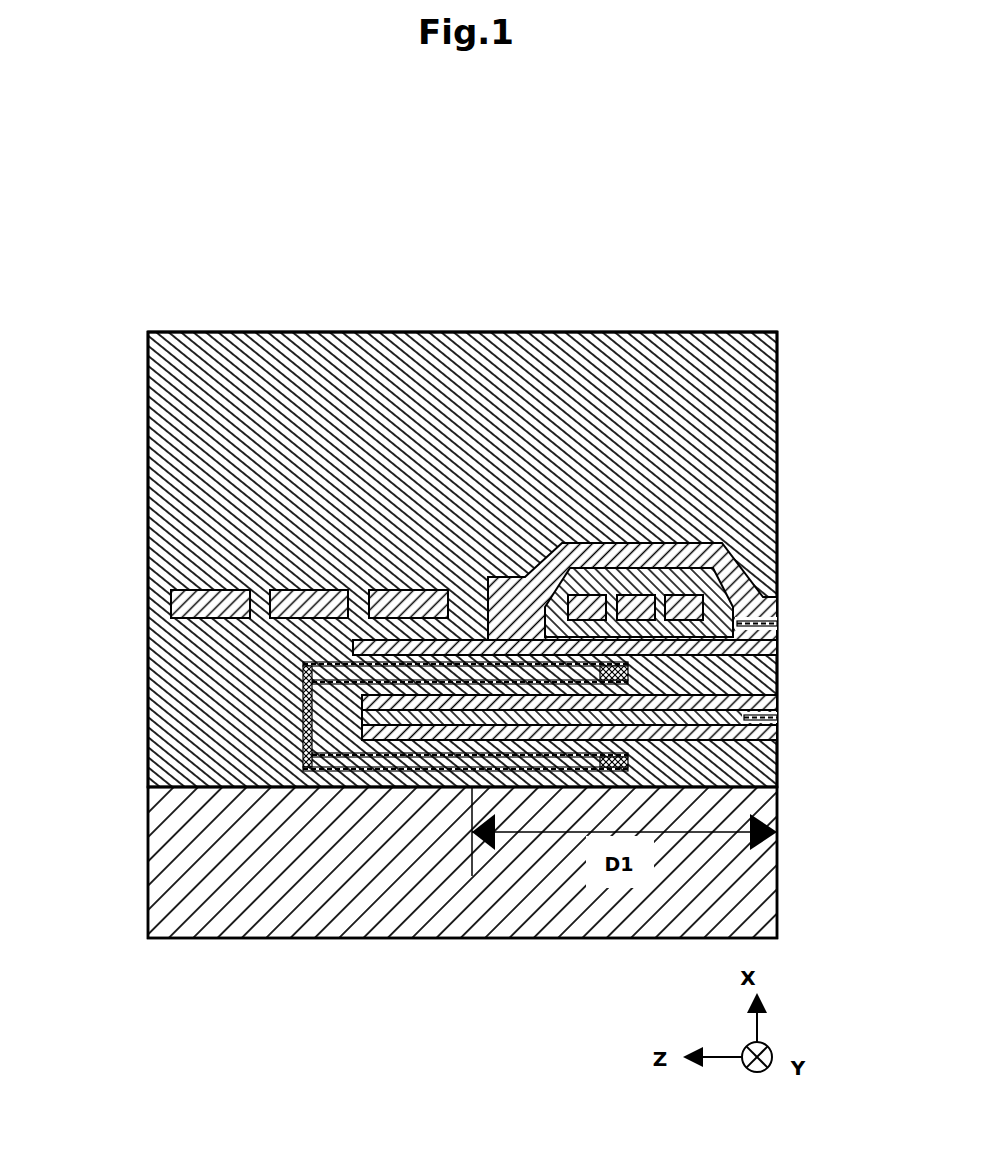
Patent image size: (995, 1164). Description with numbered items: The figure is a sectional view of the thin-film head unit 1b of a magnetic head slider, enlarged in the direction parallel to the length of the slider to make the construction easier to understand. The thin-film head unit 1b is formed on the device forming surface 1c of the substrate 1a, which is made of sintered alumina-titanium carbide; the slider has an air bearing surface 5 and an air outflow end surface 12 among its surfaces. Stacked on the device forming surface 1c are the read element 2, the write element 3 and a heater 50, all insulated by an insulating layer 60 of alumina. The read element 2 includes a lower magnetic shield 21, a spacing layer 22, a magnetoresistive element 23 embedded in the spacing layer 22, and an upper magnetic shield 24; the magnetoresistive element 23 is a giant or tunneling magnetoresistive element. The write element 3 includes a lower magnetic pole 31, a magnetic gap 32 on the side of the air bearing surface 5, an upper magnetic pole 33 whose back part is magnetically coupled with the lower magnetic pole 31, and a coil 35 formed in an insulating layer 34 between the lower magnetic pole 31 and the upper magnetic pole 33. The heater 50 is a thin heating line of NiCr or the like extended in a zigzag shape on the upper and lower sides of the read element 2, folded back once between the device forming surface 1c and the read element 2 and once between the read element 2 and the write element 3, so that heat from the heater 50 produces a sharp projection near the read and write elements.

The substrate 1a is at (218, 913).
The thin-film head unit 1b is at (233, 368).
The device forming surface 1c is at (176, 785).
The read element 2 is at (592, 716).
The write element 3 is at (621, 600).
The air bearing surface 5 is at (748, 420).
The air outflow end surface 12 is at (563, 332).
The lower magnetic shield 21 is at (777, 758).
The spacing layer 22 is at (777, 700).
The magnetoresistive element 23 is at (602, 716).
The upper magnetic shield 24 is at (777, 683).
The lower magnetic pole 31 is at (777, 644).
The magnetic gap 32 is at (793, 625).
The upper magnetic pole 33 is at (777, 608).
The insulating layer 34 is at (720, 606).
The coil 35 is at (742, 589).
The heater 50 is at (393, 787).
The insulating layer 60 is at (198, 664).